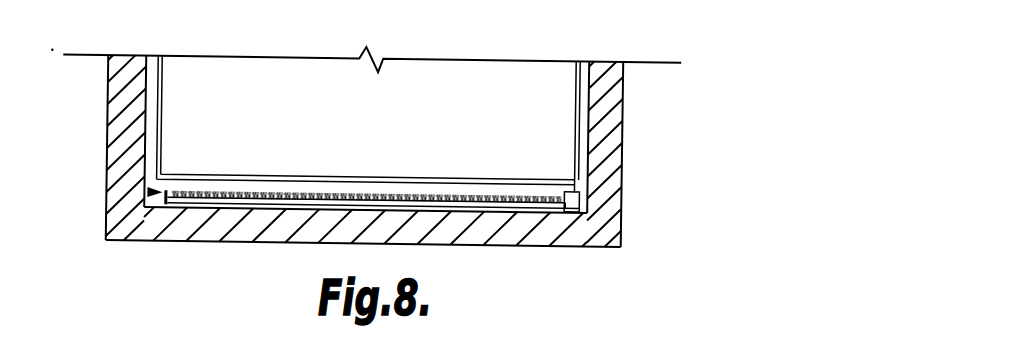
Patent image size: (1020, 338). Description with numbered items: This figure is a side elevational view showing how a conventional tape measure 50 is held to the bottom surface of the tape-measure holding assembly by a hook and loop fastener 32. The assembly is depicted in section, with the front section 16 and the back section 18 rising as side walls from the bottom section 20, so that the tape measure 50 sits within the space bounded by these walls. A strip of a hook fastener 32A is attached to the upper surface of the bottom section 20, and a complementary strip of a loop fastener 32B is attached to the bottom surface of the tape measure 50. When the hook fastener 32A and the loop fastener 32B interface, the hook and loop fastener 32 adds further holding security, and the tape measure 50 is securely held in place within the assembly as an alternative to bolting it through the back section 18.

The front section 16 is at (118, 124).
The back section 18 is at (622, 158).
The bottom section 20 is at (570, 236).
The tape measure 50 is at (548, 110).
The hook and loop fastener 32 is at (107, 209).
The loop fastener 32B is at (567, 190).
The hook fastener 32A is at (620, 227).